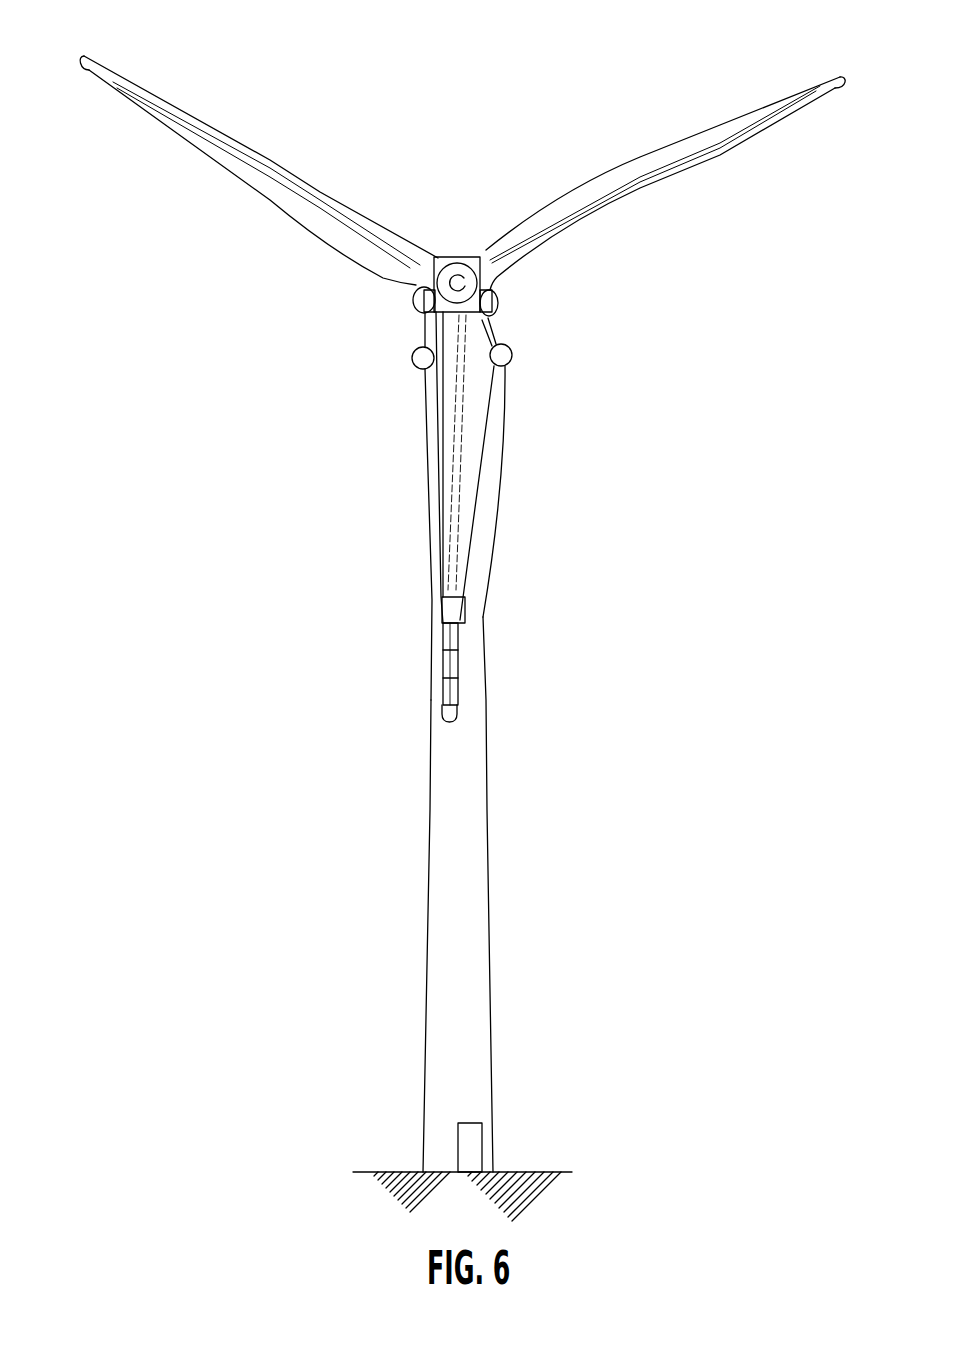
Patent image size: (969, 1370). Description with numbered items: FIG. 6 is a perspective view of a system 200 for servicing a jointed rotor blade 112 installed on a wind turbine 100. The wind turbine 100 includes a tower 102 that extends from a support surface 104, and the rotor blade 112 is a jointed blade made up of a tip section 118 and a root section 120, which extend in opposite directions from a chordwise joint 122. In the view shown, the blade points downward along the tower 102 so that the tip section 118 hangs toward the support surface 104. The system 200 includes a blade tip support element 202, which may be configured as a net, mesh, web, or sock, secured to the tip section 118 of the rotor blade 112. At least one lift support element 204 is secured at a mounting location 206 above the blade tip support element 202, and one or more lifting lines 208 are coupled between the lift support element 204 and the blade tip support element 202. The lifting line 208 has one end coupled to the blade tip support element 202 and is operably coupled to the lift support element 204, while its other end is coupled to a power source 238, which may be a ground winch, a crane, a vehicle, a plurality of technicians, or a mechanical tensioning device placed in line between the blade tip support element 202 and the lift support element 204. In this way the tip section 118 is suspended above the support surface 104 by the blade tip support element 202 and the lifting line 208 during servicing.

The wind turbine 100 is at (302, 84).
The tower 102 is at (440, 875).
The support surface 104 is at (398, 1172).
The rotor blade 112 is at (504, 228).
The tip section 118 is at (440, 730).
The root section 120 is at (484, 386).
The chordwise joint 122 is at (465, 603).
The system 200 is at (580, 382).
The blade tip support element 202 is at (462, 680).
The lift support element 204 is at (412, 312).
The mounting location 206 is at (400, 294).
The lifting line 208 is at (427, 447).
The power source 238 is at (412, 362).